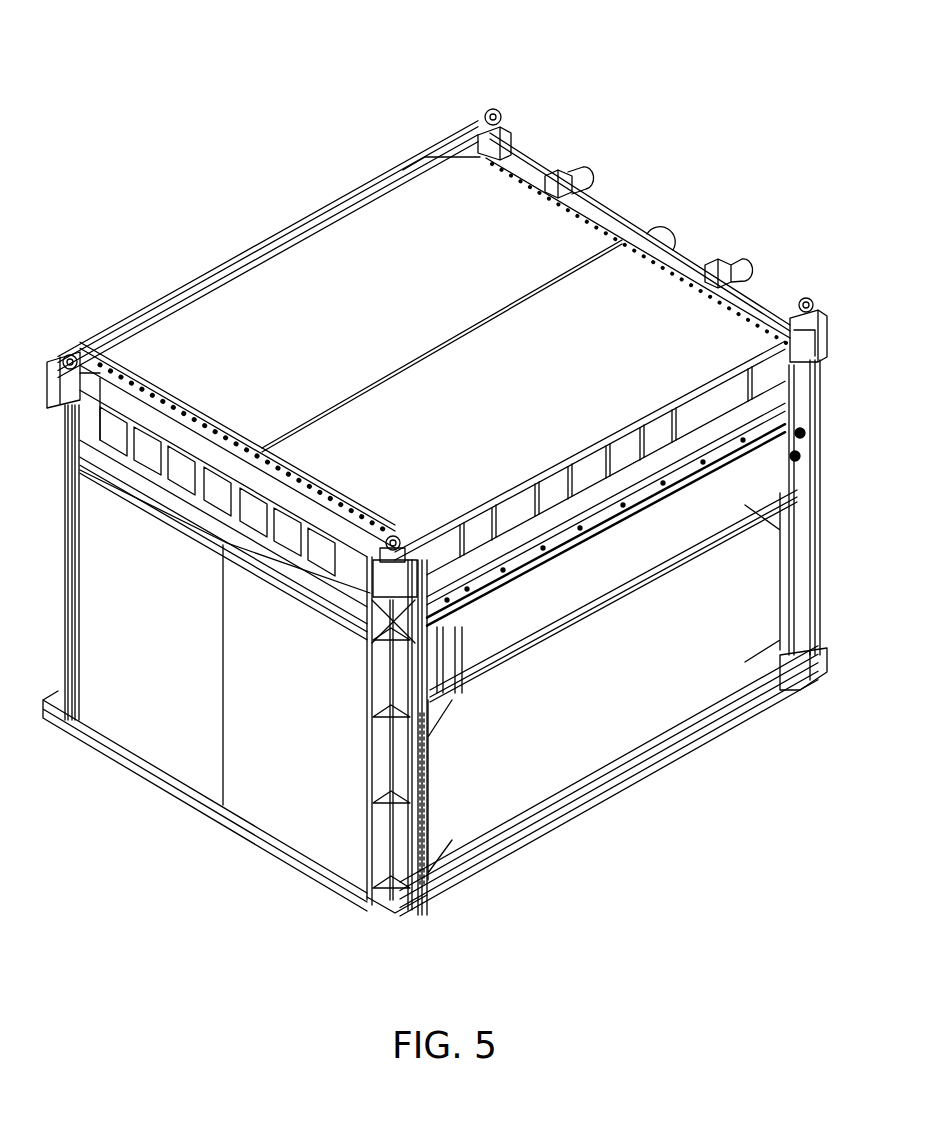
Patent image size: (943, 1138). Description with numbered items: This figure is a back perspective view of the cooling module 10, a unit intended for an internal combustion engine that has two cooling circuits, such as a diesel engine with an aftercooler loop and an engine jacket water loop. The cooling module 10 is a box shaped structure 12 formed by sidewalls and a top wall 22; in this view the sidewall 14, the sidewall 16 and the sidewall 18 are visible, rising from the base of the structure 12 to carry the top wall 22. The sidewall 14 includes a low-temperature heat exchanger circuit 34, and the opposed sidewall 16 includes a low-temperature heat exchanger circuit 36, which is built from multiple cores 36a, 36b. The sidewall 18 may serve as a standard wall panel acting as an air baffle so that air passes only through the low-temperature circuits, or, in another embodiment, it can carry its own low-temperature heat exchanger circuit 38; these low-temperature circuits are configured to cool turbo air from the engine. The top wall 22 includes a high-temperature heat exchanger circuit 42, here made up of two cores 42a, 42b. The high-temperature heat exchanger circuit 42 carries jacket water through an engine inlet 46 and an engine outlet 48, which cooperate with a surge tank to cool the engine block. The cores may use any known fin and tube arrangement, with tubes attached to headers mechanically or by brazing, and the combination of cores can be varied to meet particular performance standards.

The cooling module 10 is at (172, 80).
The box shaped structure 12 is at (105, 812).
The sidewall 14 is at (422, 360).
The sidewall 16 is at (615, 627).
The sidewall 18 is at (223, 654).
The top wall 22 is at (435, 332).
The low-temperature heat exchanger circuit 34 is at (125, 283).
The low-temperature heat exchanger circuit 36 is at (572, 760).
The core 36a is at (690, 645).
The core 36b is at (690, 530).
The low-temperature heat exchanger circuit 38 is at (275, 812).
The high-temperature heat exchanger circuit 42 is at (360, 238).
The core 42a is at (297, 325).
The core 42b is at (590, 320).
The engine inlet 46 is at (664, 234).
The engine outlet 48 is at (574, 180).